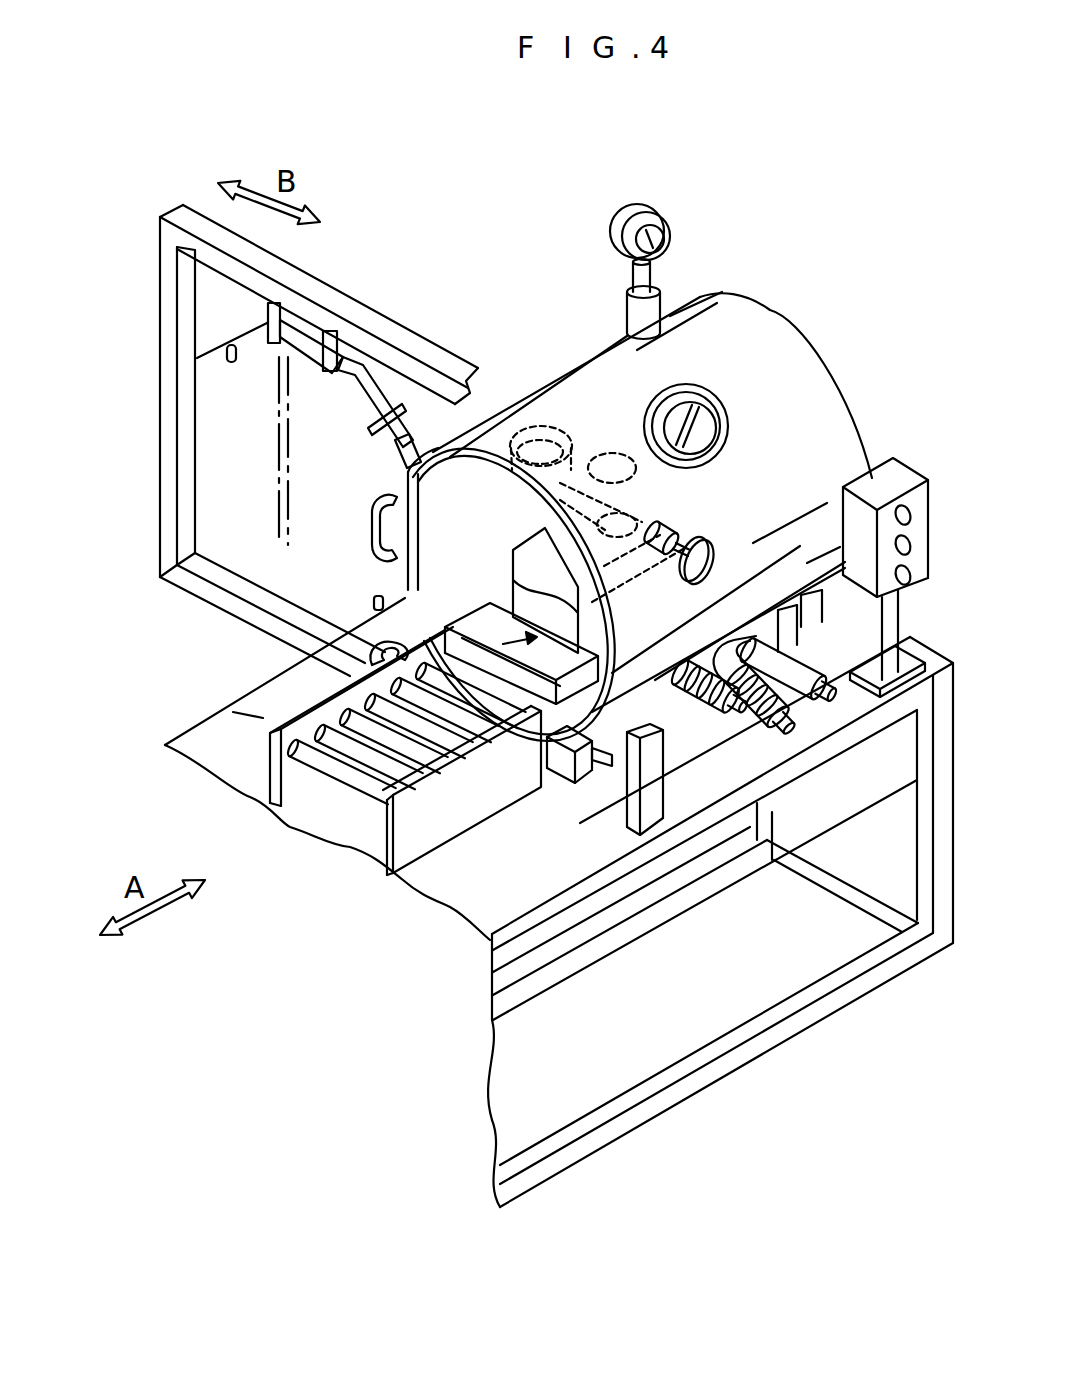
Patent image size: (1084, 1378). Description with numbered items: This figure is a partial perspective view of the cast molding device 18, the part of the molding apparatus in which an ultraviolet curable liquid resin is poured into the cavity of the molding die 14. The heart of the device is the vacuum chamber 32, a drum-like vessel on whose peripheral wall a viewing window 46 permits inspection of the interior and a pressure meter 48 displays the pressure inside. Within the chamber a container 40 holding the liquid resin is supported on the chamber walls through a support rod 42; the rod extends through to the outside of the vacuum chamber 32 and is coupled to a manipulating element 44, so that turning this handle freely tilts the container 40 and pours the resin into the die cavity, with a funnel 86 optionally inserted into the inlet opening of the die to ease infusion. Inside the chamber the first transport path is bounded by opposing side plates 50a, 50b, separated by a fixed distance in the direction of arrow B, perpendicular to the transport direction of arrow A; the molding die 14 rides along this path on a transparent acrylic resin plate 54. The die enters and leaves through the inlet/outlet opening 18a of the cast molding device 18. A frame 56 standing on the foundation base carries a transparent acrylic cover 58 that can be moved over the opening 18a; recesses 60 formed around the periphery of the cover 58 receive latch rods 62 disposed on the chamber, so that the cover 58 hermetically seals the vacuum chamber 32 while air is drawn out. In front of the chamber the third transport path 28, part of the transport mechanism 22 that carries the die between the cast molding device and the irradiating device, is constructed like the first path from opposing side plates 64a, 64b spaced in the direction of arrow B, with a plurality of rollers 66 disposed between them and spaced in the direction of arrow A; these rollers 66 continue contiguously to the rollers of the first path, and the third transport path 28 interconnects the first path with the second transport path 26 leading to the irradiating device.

The molding die 14 is at (622, 616).
The cast molding device 18 is at (505, 372).
The inlet/outlet opening 18a is at (447, 594).
The transport mechanism 22 is at (351, 794).
The second transport path 26 is at (345, 618).
The third transport path 28 is at (500, 828).
The vacuum chamber 32 is at (630, 677).
The container 40 is at (518, 502).
The support rod 42 is at (660, 539).
The manipulating element 44 is at (717, 562).
The viewing window 46 is at (715, 412).
The pressure meter 48 is at (668, 225).
The side plate 50a is at (512, 620).
The side plate 50b is at (630, 757).
The transparent acrylic resin plate 54 is at (510, 626).
The frame 56 is at (366, 320).
The transparent cover 58 is at (230, 445).
The recesses 60 is at (190, 563).
The latch rods 62 is at (580, 782).
The side plate 64a is at (262, 787).
The side plate 64b is at (412, 848).
The rollers 66 is at (337, 778).
The funnel 86 is at (604, 452).